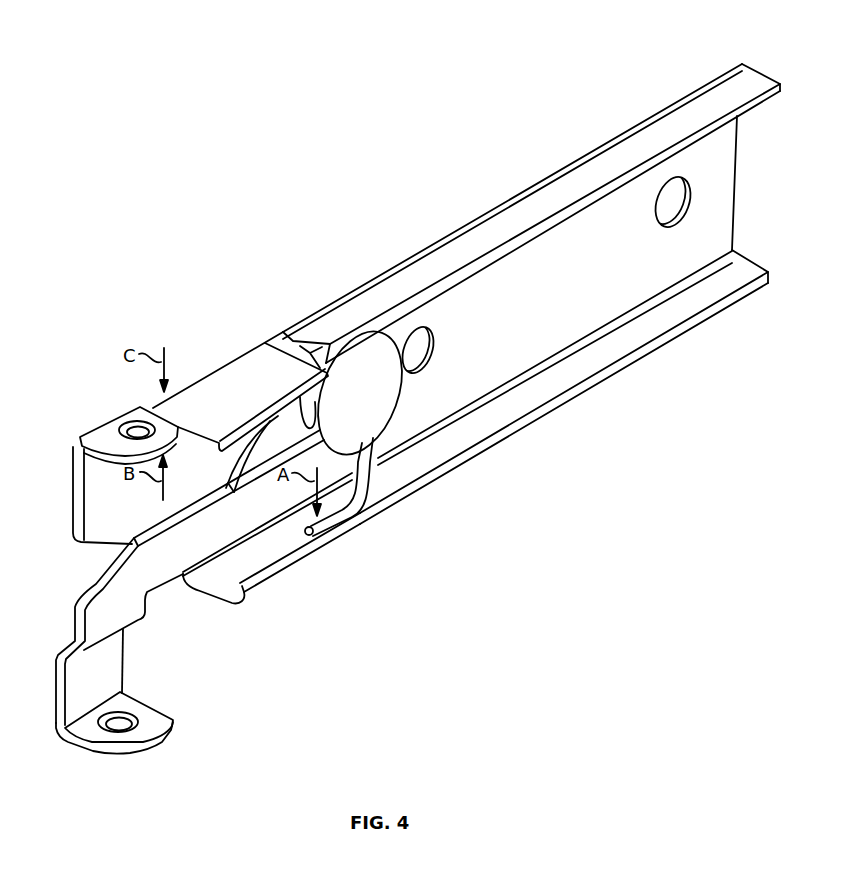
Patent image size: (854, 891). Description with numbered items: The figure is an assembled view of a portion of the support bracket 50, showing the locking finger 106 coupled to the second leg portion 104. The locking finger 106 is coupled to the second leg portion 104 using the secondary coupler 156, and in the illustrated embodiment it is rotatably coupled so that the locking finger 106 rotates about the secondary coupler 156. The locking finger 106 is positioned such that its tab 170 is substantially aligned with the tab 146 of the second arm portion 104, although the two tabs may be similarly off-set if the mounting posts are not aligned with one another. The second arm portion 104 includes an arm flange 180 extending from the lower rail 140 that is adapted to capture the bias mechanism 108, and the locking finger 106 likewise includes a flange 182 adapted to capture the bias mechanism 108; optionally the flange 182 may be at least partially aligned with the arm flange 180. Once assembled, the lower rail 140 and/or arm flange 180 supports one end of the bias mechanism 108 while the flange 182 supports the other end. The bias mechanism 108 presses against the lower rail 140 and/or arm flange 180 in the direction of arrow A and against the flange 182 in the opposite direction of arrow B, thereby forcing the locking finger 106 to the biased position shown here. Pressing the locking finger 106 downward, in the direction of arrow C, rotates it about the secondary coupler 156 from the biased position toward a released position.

The support bracket 50 is at (134, 235).
The second leg portion 104 is at (608, 308).
The locking finger 106 is at (92, 496).
The bias mechanism 108 is at (348, 503).
The lower rail 140 is at (593, 372).
The tab 146 is at (155, 717).
The secondary coupler 156 is at (380, 382).
The tab 170 is at (105, 437).
The arm flange 180 is at (296, 555).
The flange 182 is at (237, 370).